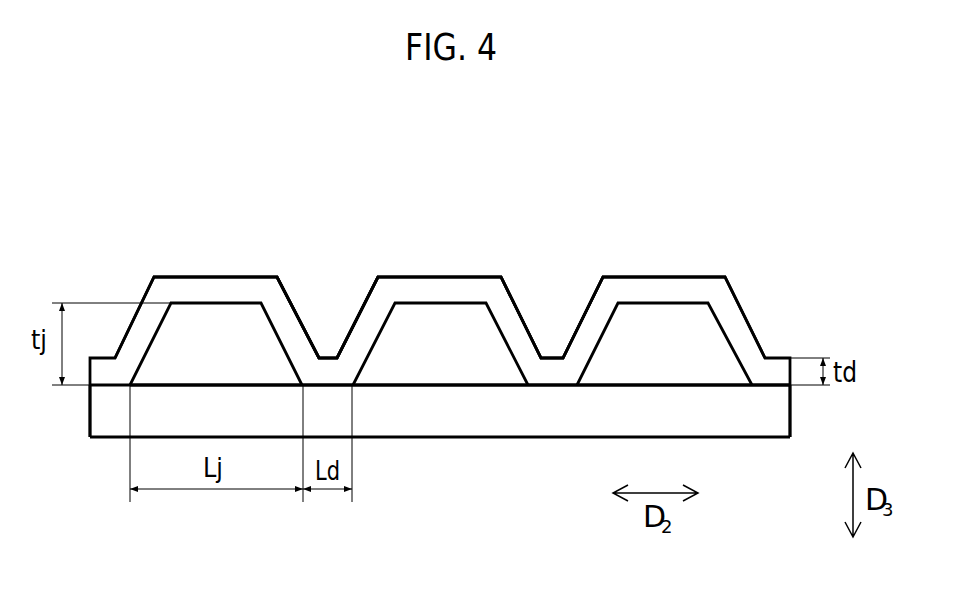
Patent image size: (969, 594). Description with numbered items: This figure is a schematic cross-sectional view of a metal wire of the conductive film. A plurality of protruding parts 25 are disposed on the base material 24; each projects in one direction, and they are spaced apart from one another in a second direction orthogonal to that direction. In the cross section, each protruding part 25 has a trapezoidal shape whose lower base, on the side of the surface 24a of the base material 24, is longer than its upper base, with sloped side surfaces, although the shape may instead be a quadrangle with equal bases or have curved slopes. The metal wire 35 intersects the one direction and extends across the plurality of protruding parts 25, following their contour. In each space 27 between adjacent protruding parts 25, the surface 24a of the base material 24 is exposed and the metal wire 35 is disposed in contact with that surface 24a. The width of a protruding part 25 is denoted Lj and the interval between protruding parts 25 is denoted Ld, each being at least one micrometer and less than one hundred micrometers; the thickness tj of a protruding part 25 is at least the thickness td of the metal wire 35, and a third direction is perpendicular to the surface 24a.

The base material 24 is at (780, 410).
The surface of the base material 24a is at (755, 384).
The protruding part 25 is at (218, 335).
The space 27 is at (327, 364).
The metal wire 35 is at (397, 290).